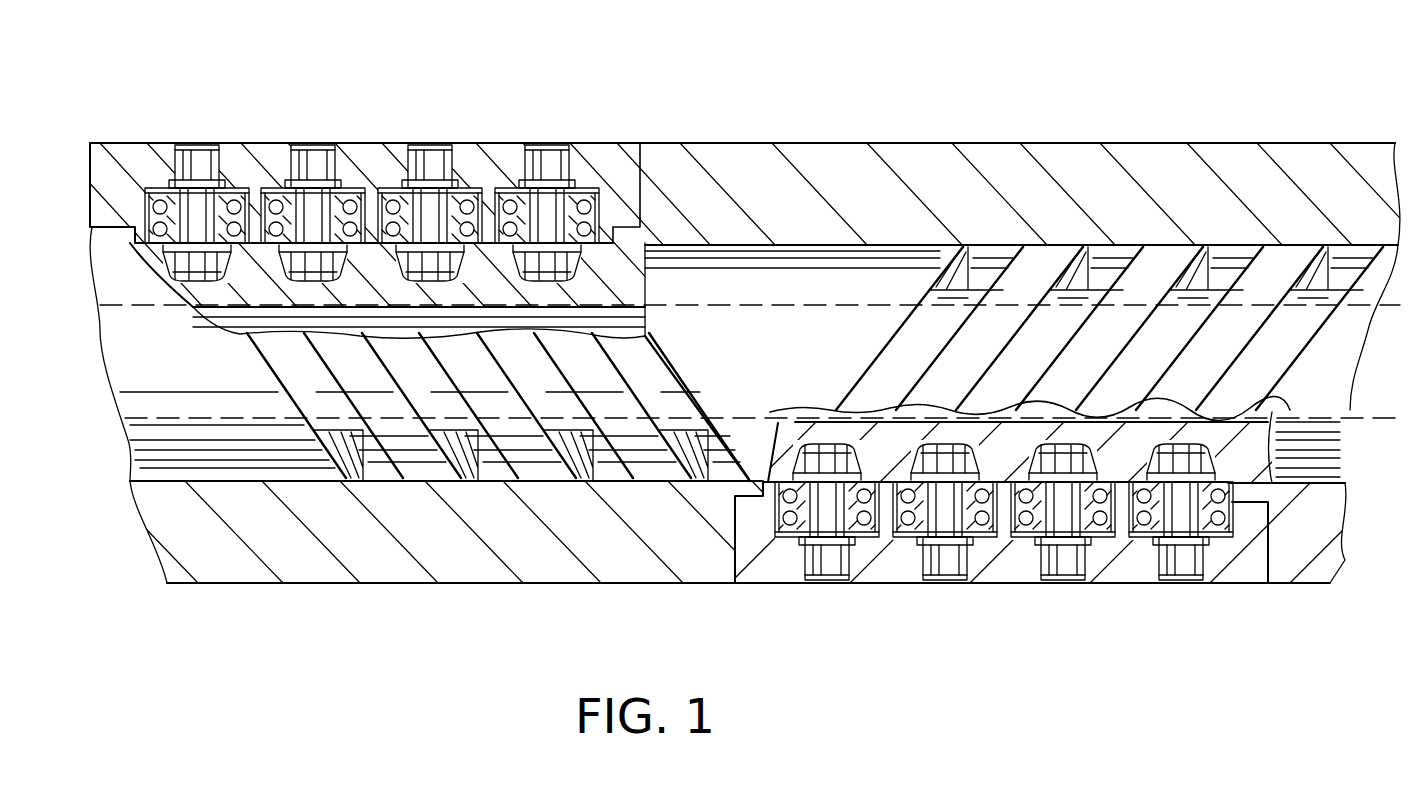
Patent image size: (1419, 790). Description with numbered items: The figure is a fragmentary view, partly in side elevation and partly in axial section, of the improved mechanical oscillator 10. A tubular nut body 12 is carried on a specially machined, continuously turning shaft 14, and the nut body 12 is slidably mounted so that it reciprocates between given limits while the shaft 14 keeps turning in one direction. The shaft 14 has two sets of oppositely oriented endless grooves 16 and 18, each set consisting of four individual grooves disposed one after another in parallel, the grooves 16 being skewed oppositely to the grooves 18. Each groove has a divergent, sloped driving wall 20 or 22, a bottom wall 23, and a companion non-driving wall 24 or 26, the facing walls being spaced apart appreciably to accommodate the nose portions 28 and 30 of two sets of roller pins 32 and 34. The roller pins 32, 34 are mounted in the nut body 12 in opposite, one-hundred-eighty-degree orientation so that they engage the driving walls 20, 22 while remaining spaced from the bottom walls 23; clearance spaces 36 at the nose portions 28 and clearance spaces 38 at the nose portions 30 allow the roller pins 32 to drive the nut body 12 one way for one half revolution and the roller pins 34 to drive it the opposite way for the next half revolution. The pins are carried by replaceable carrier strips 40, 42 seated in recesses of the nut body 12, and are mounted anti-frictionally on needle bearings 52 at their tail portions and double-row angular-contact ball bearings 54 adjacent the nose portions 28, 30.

The mechanical oscillator 10 is at (778, 106).
The tubular nut body 12 is at (990, 165).
The shaft 14 is at (744, 363).
The endless grooves 16 is at (395, 467).
The endless grooves 18 is at (958, 265).
The driving wall 20 is at (192, 262).
The driving wall 22 is at (903, 397).
The bottom wall 23 is at (368, 470).
The non-driving wall 24 is at (297, 340).
The non-driving wall 26 is at (943, 272).
The nose portion 28 is at (573, 267).
The nose portion 30 is at (826, 462).
The roller pins 32 is at (174, 200).
The roller pins 34 is at (830, 520).
The clearance spaces 36 is at (235, 256).
The clearance spaces 38 is at (795, 455).
The carrier strip 40 is at (625, 168).
The carrier strip 42 is at (1228, 575).
The needle bearings 52 is at (197, 165).
The double-row angular-contact ball bearings 54 is at (158, 212).